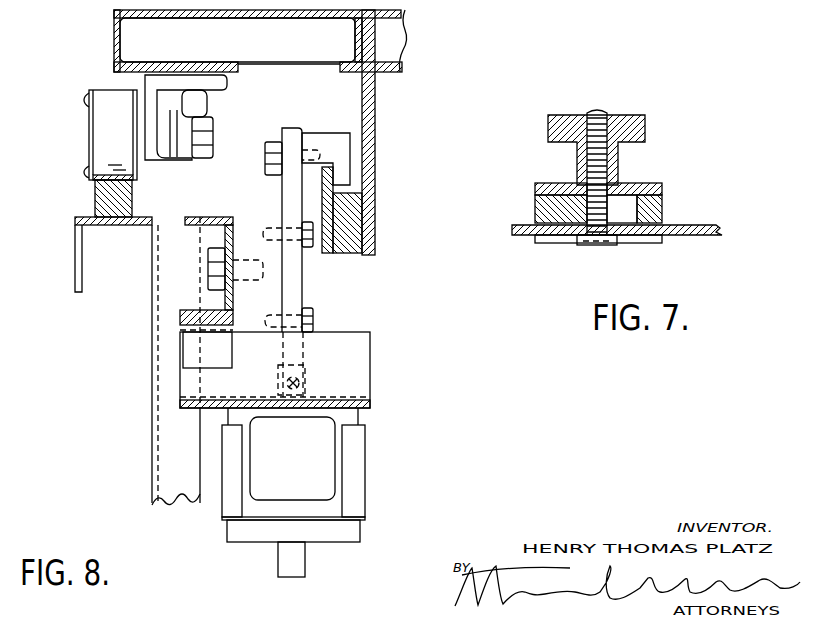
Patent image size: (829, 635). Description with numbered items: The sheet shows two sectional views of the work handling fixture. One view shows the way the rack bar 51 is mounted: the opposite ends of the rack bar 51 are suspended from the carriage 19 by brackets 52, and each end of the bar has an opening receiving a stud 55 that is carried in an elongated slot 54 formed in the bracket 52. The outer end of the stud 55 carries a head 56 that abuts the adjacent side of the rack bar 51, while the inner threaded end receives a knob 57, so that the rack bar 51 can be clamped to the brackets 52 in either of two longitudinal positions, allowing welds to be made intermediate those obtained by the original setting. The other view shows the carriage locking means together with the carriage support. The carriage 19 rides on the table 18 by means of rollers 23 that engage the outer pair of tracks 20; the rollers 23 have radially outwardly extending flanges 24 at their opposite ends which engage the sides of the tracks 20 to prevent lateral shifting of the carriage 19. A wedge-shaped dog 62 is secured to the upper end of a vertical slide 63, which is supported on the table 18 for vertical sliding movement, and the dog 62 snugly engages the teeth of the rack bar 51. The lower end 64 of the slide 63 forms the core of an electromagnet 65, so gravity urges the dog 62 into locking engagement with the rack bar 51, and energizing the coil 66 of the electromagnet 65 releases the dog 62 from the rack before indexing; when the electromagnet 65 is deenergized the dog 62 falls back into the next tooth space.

In FIG. 8, the table 18 is at (66, 264).
In FIG. 8, the carriage 19 is at (101, 44).
In FIG. 8, the outer pair of tracks 20 is at (105, 190).
In FIG. 8, the rollers 23 is at (115, 118).
In FIG. 8, the flanges 24 is at (90, 92).
In FIG. 8, the rack bar 51 is at (342, 183).
In FIG. 7, the rack bar 51 is at (716, 228).
In FIG. 8, the brackets 52 is at (368, 108).
In FIG. 7, the brackets 52 is at (547, 183).
In FIG. 7, the elongated slots 54 is at (622, 210).
In FIG. 7, the studs 55 is at (601, 208).
In FIG. 7, the heads 56 is at (583, 247).
In FIG. 7, the knob 57 is at (642, 118).
In FIG. 8, the wedge-shaped dog 62 is at (334, 145).
In FIG. 8, the vertical slide 63 is at (290, 190).
In FIG. 8, the lower end of the slide 64 is at (312, 388).
In FIG. 8, the electromagnet 65 is at (265, 488).
In FIG. 8, the coil 66 is at (318, 467).